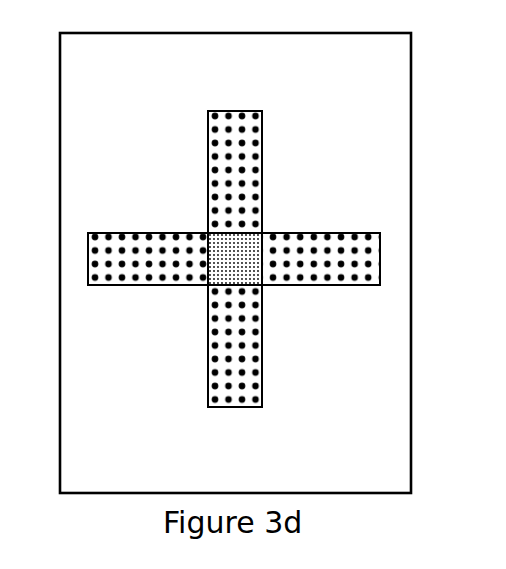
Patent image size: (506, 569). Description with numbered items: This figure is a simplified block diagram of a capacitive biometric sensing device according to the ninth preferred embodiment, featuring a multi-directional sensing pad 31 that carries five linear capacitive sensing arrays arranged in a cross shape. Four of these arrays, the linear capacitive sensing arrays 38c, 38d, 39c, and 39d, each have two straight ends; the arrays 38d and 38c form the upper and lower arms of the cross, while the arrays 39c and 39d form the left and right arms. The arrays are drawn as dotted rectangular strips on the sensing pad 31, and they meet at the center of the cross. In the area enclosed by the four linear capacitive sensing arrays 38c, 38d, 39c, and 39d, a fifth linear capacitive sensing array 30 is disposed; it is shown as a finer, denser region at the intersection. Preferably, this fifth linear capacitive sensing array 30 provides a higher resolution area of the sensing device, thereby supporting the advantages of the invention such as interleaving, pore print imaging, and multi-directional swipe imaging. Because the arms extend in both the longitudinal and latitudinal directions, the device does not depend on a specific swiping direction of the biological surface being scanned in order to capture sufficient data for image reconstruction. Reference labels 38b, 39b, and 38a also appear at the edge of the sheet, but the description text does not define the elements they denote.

The sensing pad 31 is at (70, 479).
The fifth linear capacitive sensing array 30 is at (237, 253).
The linear capacitive sensing array 38d is at (262, 146).
The linear capacitive sensing array 38c is at (262, 345).
The strip arm 38b is at (13, 107).
The strip arm 38a is at (13, 429).
The linear capacitive sensing array 39c is at (145, 233).
The linear capacitive sensing array 39d is at (315, 286).
The strip arm 39b is at (13, 342).